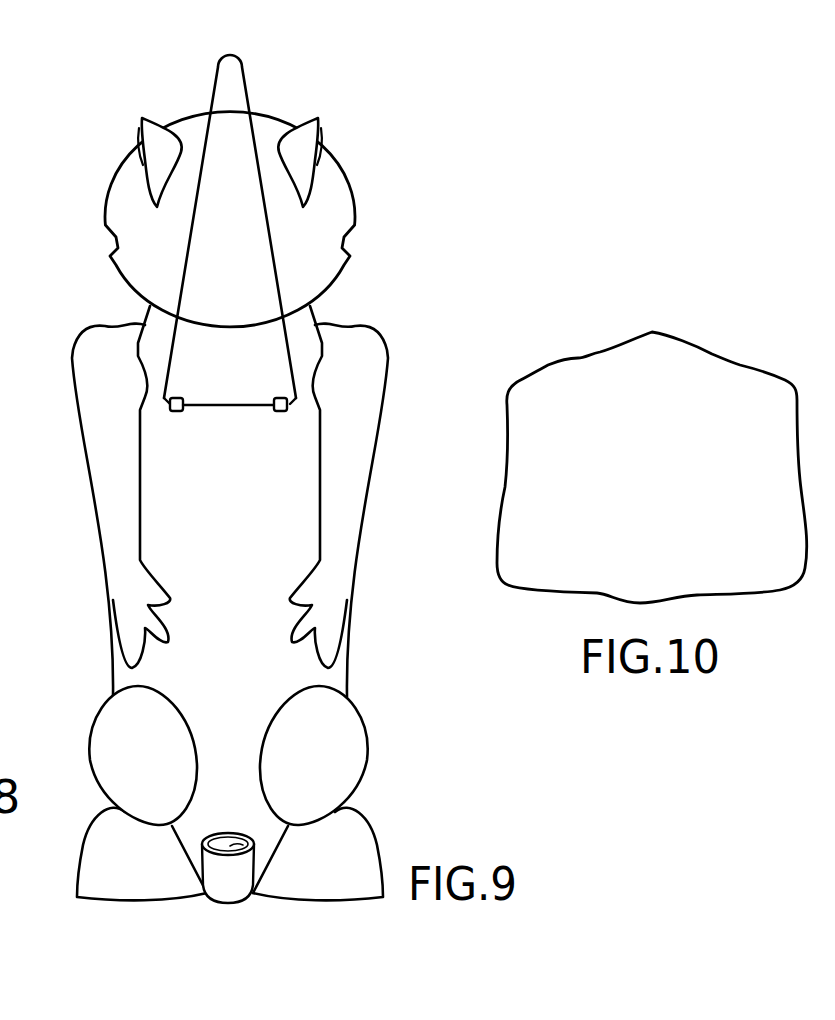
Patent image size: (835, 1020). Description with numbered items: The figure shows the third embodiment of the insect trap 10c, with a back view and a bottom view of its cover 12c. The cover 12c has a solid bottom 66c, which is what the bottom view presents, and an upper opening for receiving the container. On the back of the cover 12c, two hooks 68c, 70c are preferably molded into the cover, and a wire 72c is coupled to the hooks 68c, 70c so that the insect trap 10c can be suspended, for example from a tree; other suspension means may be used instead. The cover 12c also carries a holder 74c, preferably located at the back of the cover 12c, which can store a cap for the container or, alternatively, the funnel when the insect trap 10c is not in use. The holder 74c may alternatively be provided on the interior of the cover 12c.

In FIG. 9, the insect trap 10c is at (138, 92).
In FIG. 9, the cover 12c is at (83, 343).
In FIG. 10, the cover 12c is at (580, 353).
In FIG. 9, the solid bottom 66c is at (325, 903).
In FIG. 10, the solid bottom 66c is at (722, 377).
In FIG. 9, the hook 68c is at (170, 412).
In FIG. 9, the hook 70c is at (287, 412).
In FIG. 9, the wire 72c is at (273, 237).
In FIG. 9, the holder 74c is at (245, 847).